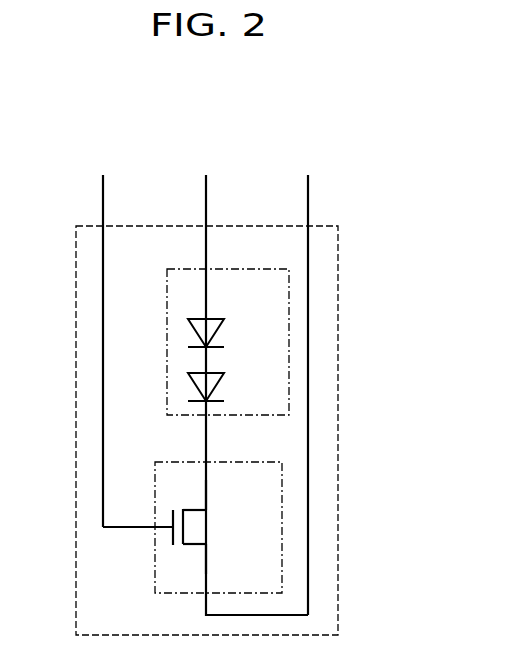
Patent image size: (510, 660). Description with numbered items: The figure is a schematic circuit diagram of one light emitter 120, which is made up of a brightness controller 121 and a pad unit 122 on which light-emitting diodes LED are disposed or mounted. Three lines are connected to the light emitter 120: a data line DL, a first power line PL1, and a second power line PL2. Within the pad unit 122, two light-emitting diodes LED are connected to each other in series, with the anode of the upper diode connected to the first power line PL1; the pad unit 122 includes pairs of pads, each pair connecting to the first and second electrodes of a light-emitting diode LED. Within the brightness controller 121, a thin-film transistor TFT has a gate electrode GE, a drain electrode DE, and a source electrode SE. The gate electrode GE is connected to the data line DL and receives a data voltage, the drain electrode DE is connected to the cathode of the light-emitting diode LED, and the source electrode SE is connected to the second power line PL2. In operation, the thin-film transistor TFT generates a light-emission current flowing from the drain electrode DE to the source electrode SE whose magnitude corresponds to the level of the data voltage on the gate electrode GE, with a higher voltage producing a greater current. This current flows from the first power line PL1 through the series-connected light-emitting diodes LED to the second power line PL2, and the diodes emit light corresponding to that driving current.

The light emitter 120 is at (338, 431).
The brightness controller 121 is at (230, 462).
The pad unit 122 is at (230, 269).
The data line DL is at (103, 200).
The first power line PL1 is at (206, 205).
The second power line PL2 is at (308, 205).
The light-emitting diode LED is at (209, 318).
The thin-film transistor TFT is at (210, 527).
The drain electrode DE is at (207, 481).
The source electrode SE is at (207, 572).
The gate electrode GE is at (138, 528).